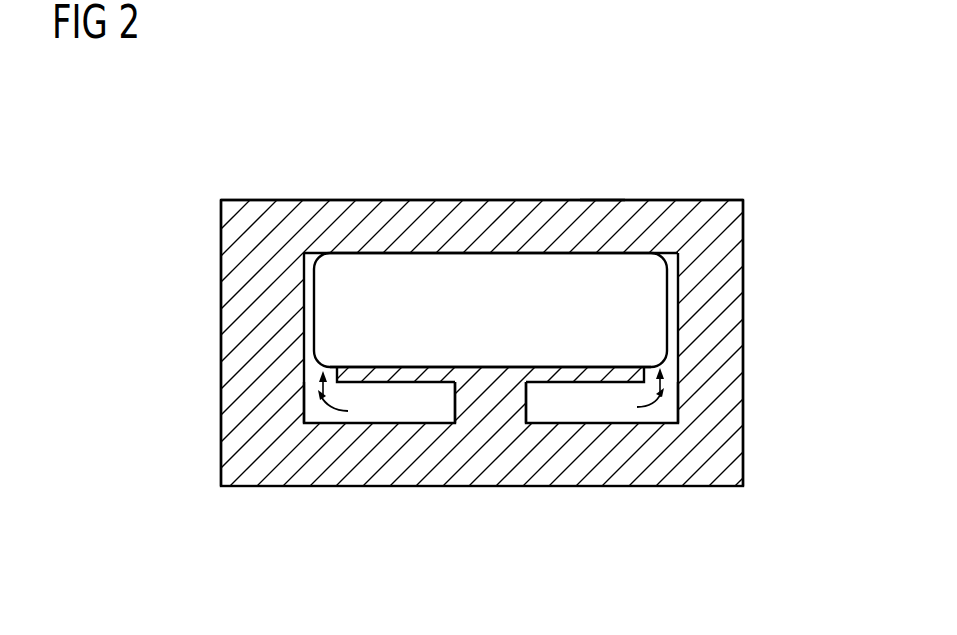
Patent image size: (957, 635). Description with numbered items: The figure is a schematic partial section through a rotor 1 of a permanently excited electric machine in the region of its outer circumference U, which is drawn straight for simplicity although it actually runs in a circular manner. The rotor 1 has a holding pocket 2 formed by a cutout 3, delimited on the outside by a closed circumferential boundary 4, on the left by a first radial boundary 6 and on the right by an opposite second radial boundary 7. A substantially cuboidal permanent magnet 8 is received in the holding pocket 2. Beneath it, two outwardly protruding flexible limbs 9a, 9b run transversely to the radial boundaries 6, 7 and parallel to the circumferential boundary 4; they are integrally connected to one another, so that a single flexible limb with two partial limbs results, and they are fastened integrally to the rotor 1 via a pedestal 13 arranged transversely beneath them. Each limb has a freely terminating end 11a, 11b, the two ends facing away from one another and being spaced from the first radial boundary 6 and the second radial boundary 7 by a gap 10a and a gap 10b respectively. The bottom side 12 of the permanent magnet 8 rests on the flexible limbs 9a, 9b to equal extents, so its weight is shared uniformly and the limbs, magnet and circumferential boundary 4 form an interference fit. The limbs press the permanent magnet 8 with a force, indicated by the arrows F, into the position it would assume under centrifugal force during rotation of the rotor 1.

The rotor 1 is at (785, 320).
The holding pocket 2 is at (312, 263).
The cutout 3 is at (310, 343).
The circumferential boundary 4 is at (454, 218).
The first radial boundary 6 is at (245, 274).
The second radial boundary 7 is at (718, 277).
The permanent magnet 8 is at (525, 293).
The flexible limb 9a is at (405, 375).
The flexible limb 9b is at (538, 375).
The gap 10a is at (310, 373).
The gap 10b is at (672, 371).
The freely terminating end 11a is at (318, 393).
The freely terminating end 11b is at (663, 392).
The bottom side 12 is at (578, 370).
The pedestal 13 is at (472, 410).
The outer circumference U is at (602, 201).
The force F is at (491, 406).